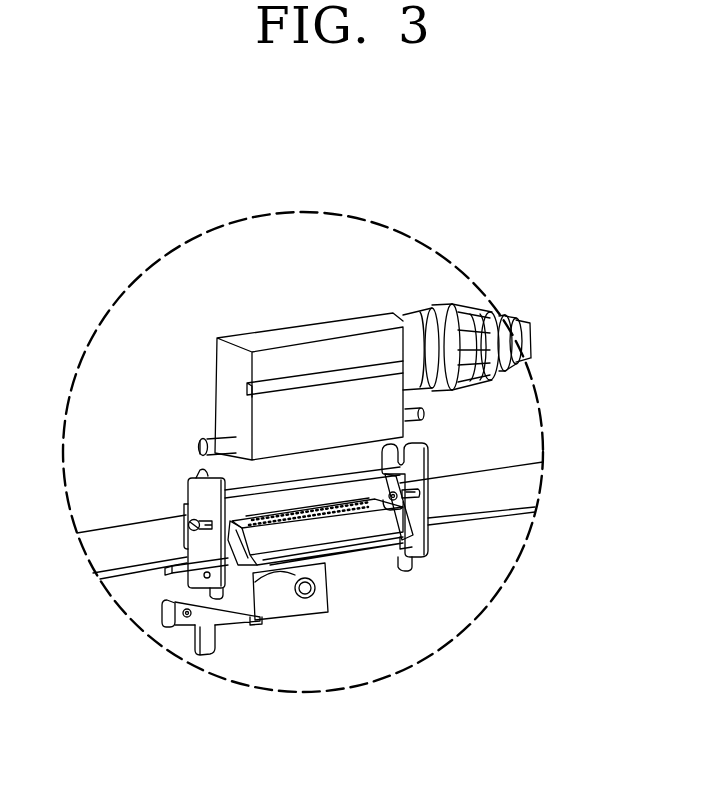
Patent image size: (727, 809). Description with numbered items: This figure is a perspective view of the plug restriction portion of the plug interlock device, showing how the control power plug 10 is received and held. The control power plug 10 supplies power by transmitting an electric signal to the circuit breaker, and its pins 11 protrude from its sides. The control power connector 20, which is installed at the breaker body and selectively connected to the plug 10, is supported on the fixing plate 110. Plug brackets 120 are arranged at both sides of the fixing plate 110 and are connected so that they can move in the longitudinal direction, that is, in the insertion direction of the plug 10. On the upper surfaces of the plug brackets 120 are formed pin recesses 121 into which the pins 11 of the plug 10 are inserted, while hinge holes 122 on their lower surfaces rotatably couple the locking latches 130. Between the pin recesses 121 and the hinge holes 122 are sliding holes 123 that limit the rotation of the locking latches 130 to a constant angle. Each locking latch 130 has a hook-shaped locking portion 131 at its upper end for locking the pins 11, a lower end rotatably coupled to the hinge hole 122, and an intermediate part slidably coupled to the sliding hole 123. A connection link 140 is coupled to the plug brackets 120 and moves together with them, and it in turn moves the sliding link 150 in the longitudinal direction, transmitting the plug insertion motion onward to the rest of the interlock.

The control power plug 10 is at (298, 327).
The pins 11 is at (198, 448).
The control power connector 20 is at (341, 519).
The fixing plate 110 is at (313, 563).
The plug brackets 120 is at (176, 566).
The pin recesses 121 is at (186, 490).
The hinge holes 122 is at (200, 604).
The sliding holes 123 is at (188, 523).
The locking latches 130 is at (380, 540).
The locking portions 131 is at (400, 483).
The connection link 140 is at (283, 612).
The sliding link 150 is at (214, 653).